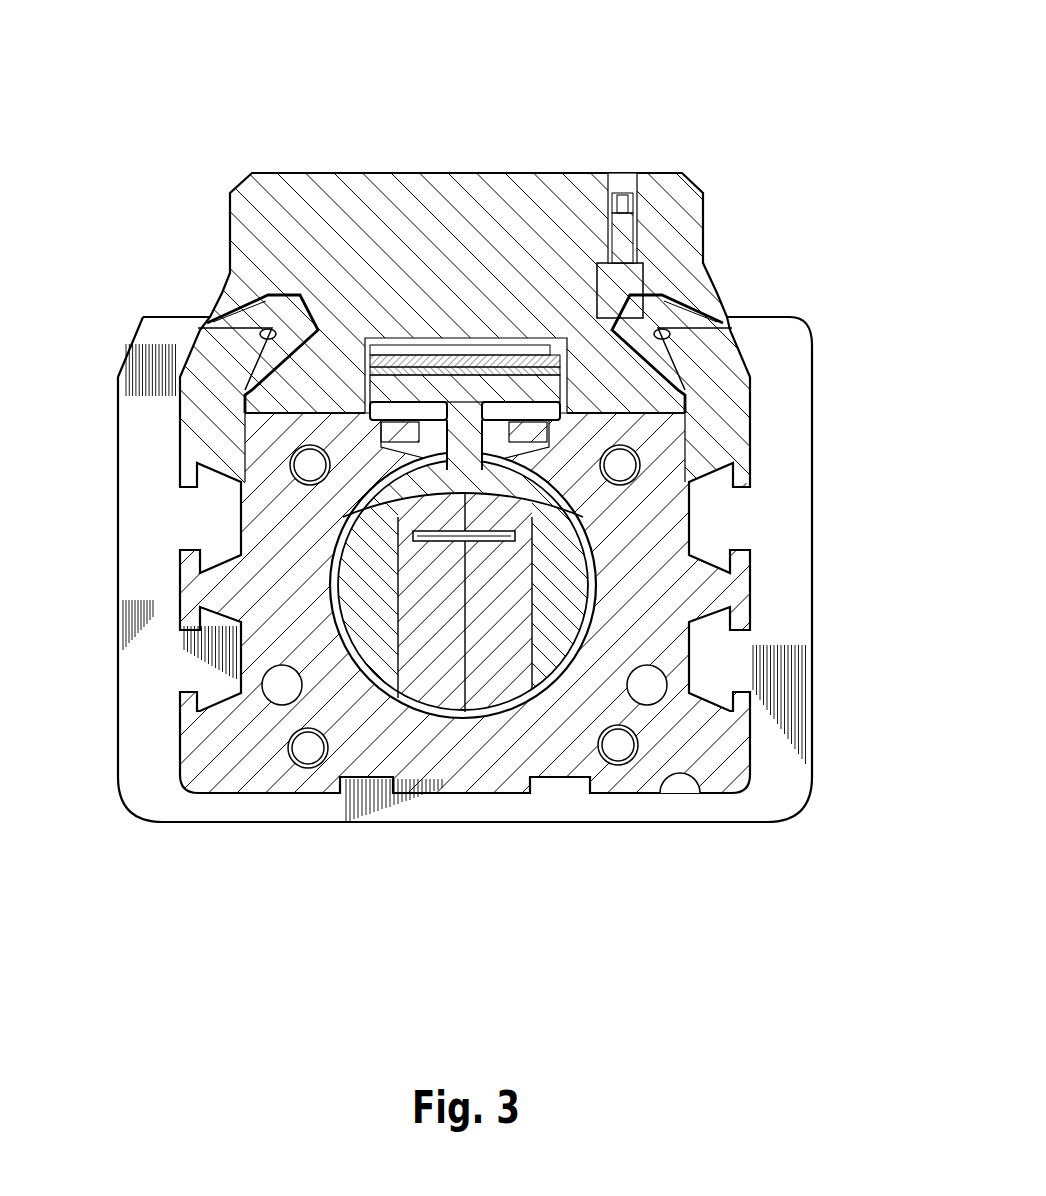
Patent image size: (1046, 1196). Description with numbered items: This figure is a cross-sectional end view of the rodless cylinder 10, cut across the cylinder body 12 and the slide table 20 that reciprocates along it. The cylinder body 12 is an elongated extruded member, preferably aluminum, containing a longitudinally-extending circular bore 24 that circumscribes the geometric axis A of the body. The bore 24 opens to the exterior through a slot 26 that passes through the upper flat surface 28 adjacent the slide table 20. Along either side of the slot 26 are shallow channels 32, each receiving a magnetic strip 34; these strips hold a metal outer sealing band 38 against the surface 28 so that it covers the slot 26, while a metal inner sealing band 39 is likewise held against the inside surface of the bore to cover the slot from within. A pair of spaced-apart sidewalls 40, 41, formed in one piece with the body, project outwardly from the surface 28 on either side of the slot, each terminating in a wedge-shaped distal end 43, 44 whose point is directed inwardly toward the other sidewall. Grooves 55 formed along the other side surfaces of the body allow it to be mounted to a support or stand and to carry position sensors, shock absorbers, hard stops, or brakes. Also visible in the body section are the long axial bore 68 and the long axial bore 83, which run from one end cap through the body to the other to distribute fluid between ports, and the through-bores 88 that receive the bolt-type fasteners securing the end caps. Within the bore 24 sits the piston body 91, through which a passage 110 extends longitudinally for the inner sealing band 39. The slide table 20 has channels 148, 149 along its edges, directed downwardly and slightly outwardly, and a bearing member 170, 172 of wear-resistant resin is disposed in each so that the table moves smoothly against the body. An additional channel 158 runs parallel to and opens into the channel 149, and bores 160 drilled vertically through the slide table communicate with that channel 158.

The rodless cylinder 10 is at (780, 82).
The cylinder body 12 is at (673, 780).
The slide table 20 is at (520, 192).
The circular bore 24 is at (600, 530).
The slot 26 is at (345, 478).
The upper flat surface 28 is at (207, 373).
The shallow channels 32 is at (383, 432).
The magnetic strip 34 is at (392, 455).
The outer sealing band 38 is at (400, 338).
The inner sealing band 39 is at (413, 537).
The sidewall 40 is at (138, 318).
The sidewall 41 is at (725, 355).
The distal end 43 is at (268, 294).
The distal end 44 is at (700, 330).
The grooves 55 is at (777, 640).
The long axial bore 68 is at (283, 688).
The long axial bore 83 is at (645, 682).
The through-bores 88 is at (303, 466).
The piston body 91 is at (567, 623).
The passage 110 is at (345, 630).
The channel 148 is at (283, 332).
The channel 149 is at (660, 320).
The additional channel 158 is at (646, 322).
The bores 160 is at (622, 193).
The bearing member 170 is at (227, 292).
The bearing member 172 is at (722, 321).
The geometric axis A is at (377, 645).